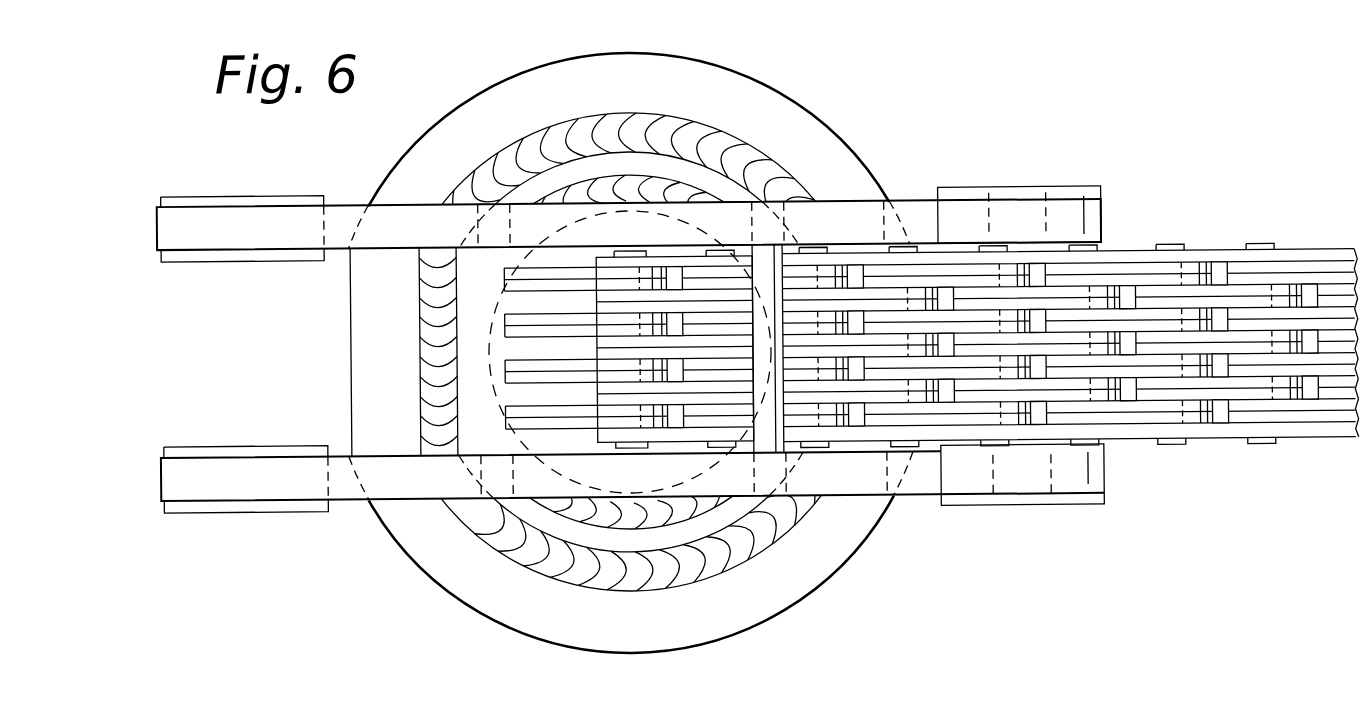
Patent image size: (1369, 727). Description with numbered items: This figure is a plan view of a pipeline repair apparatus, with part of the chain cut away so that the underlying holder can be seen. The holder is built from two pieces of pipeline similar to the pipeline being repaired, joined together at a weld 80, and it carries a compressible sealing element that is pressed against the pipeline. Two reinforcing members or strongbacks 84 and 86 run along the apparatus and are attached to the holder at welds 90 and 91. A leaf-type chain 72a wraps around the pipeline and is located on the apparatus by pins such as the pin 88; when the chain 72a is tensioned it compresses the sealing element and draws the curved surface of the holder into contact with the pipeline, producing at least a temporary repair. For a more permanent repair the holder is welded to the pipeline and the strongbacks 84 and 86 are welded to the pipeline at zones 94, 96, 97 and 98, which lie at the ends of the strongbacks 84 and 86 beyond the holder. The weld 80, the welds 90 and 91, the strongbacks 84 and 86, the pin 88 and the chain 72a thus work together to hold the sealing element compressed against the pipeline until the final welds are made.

The chain 72a is at (1163, 256).
The weld 80 is at (727, 553).
The strongback 84 is at (1073, 211).
The strongback 86 is at (1077, 474).
The pin 88 is at (770, 453).
The weld 90 is at (703, 183).
The weld 91 is at (553, 514).
The zone 94 is at (1037, 501).
The zone 96 is at (231, 509).
The zone 97 is at (228, 199).
The zone 98 is at (1010, 190).